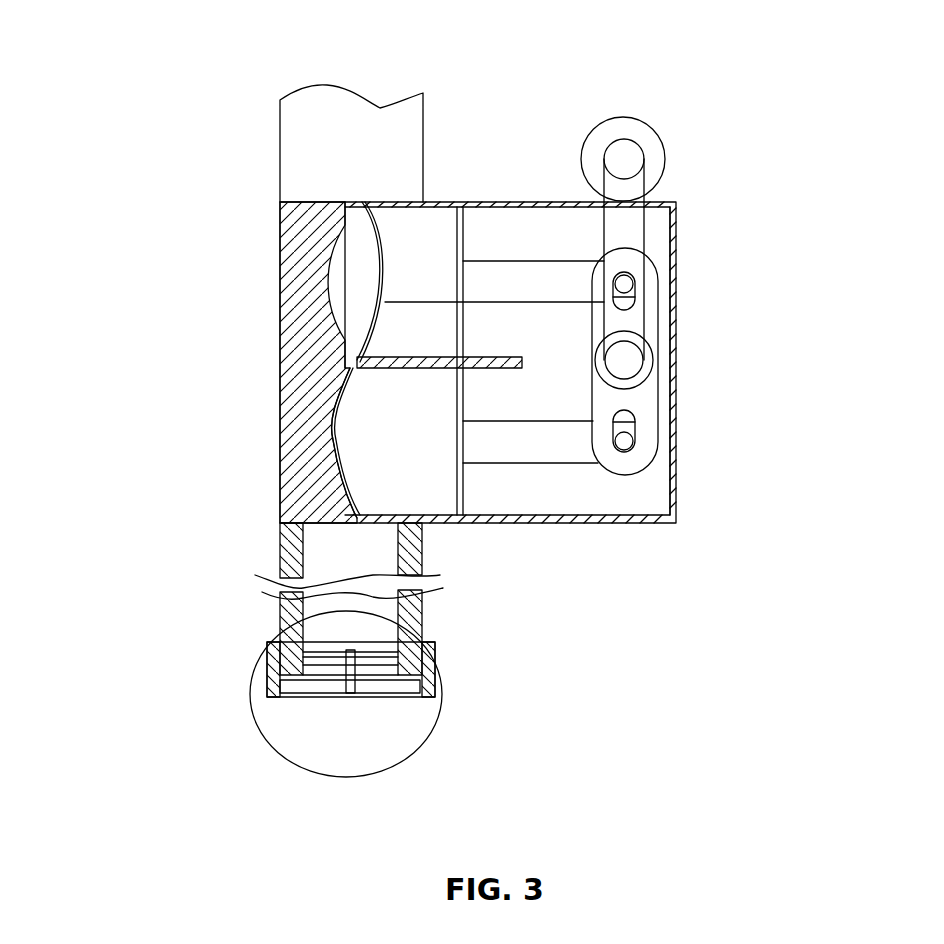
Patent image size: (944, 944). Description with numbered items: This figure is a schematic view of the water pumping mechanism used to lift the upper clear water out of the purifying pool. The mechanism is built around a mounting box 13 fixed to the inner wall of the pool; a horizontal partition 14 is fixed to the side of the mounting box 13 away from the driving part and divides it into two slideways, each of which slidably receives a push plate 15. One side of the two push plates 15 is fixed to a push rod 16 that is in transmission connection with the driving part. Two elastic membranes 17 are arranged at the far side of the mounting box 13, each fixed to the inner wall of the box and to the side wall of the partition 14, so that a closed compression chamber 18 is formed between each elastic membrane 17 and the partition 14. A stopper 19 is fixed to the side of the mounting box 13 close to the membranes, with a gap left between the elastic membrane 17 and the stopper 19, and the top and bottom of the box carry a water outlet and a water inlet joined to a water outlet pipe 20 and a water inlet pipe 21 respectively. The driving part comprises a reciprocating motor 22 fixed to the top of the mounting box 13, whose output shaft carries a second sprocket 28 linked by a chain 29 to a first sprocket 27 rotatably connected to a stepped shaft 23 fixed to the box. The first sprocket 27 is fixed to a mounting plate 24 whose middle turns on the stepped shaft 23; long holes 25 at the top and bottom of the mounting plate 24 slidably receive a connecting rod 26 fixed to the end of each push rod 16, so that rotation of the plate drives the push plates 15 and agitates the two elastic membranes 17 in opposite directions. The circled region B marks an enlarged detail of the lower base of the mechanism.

The mounting box 13 is at (643, 523).
The partition 14 is at (385, 357).
The push plate 15 is at (390, 303).
The push rod 16 is at (538, 282).
The elastic membrane 17 is at (370, 247).
The compression chamber 18 is at (383, 440).
The stopper 19 is at (303, 220).
The water outlet pipe 20 is at (318, 128).
The water inlet pipe 21 is at (267, 573).
The reciprocating motor 22 is at (617, 125).
The stepped shaft 23 is at (653, 365).
The mounting plate 24 is at (643, 448).
The long hole 25 is at (627, 307).
The connecting rod 26 is at (622, 283).
The first sprocket 27 is at (623, 360).
The second sprocket 28 is at (622, 160).
The chain 29 is at (648, 225).
The detail B is at (250, 698).